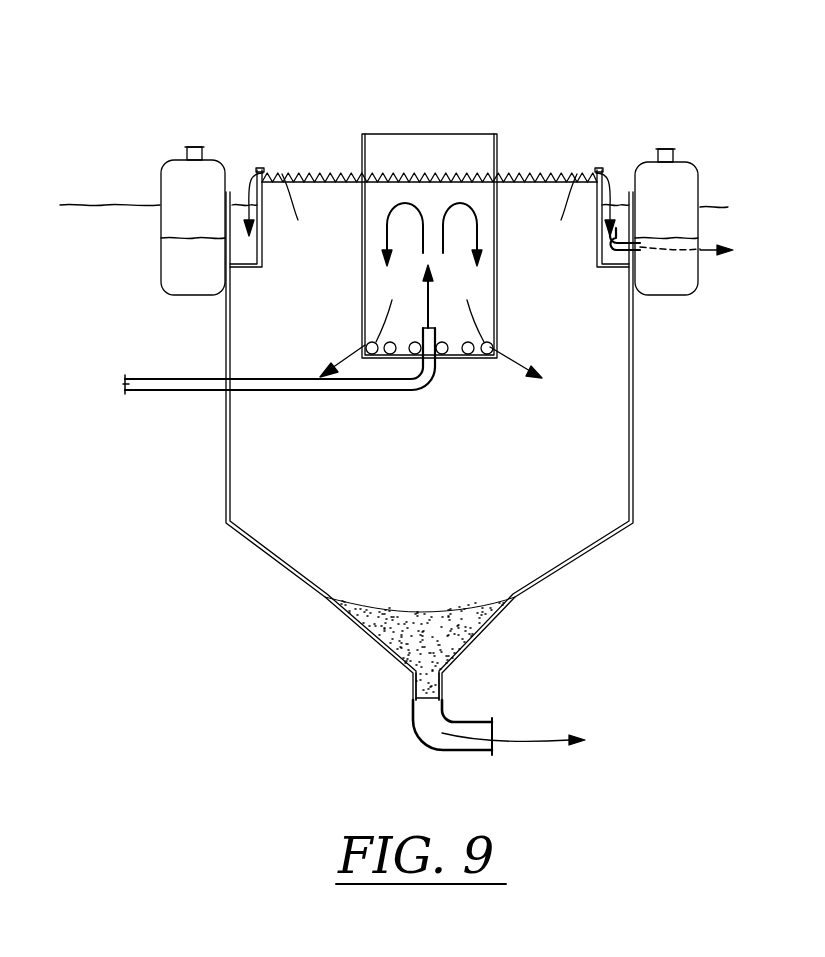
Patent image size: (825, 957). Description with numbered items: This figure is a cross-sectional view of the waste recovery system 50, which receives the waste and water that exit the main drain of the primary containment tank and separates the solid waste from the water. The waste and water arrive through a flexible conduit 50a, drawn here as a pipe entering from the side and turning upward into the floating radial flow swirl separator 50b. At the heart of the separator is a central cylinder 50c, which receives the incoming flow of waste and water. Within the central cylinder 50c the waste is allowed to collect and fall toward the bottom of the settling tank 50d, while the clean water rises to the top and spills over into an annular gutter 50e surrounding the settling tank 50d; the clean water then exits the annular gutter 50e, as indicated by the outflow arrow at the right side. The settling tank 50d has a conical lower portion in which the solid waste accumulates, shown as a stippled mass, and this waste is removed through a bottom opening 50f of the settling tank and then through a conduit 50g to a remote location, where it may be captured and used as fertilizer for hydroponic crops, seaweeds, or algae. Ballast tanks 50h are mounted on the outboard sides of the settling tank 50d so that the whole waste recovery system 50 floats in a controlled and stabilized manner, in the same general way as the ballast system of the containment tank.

The waste recovery system 50 is at (505, 146).
The flexible conduit 50a is at (187, 392).
The floating radial flow swirl separator 50b is at (225, 338).
The central cylinder 50c is at (498, 333).
The settling tank 50d is at (633, 470).
The annular gutter 50e is at (252, 255).
The bottom opening 50f is at (443, 688).
The conduit 50g is at (423, 740).
The ballast tanks 50h is at (172, 183).